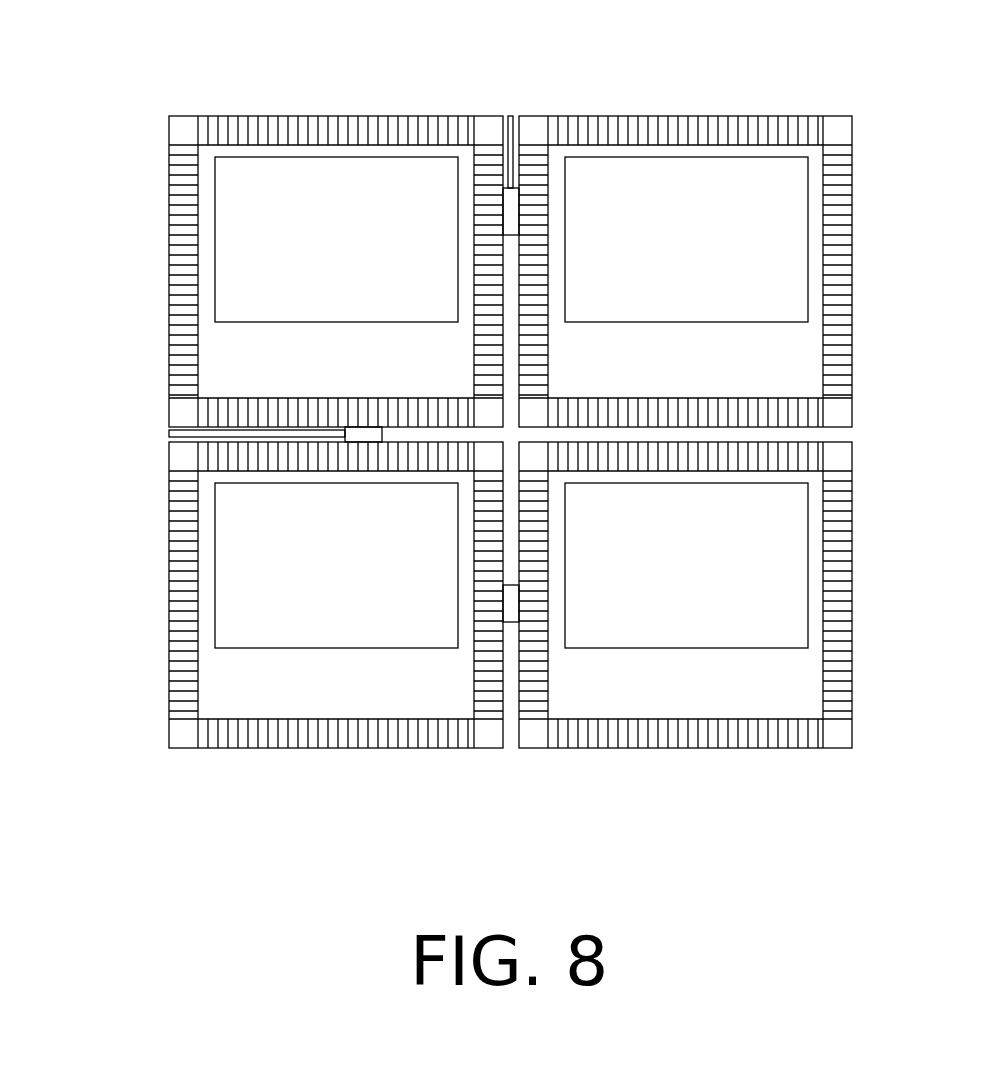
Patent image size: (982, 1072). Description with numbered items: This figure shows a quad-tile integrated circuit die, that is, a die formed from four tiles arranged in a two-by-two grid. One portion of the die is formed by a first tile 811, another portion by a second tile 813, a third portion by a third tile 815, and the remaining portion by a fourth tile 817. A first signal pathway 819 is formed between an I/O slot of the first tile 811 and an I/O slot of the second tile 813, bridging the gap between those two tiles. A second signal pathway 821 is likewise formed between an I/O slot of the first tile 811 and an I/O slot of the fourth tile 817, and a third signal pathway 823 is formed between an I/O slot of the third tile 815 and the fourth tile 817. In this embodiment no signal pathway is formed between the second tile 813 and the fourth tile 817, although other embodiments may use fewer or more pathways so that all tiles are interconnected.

The first tile 811 is at (292, 115).
The second tile 813 is at (702, 115).
The third tile 815 is at (738, 749).
The fourth tile 817 is at (266, 749).
The first signal pathway 819 is at (510, 116).
The connecting conductor 821 is at (169, 432).
The connecting conductor 823 is at (515, 623).